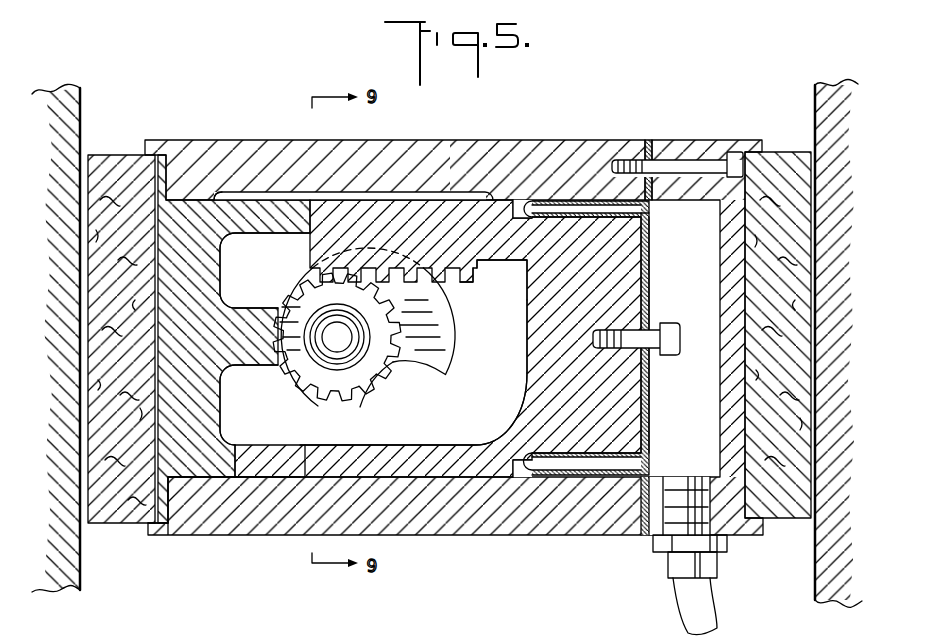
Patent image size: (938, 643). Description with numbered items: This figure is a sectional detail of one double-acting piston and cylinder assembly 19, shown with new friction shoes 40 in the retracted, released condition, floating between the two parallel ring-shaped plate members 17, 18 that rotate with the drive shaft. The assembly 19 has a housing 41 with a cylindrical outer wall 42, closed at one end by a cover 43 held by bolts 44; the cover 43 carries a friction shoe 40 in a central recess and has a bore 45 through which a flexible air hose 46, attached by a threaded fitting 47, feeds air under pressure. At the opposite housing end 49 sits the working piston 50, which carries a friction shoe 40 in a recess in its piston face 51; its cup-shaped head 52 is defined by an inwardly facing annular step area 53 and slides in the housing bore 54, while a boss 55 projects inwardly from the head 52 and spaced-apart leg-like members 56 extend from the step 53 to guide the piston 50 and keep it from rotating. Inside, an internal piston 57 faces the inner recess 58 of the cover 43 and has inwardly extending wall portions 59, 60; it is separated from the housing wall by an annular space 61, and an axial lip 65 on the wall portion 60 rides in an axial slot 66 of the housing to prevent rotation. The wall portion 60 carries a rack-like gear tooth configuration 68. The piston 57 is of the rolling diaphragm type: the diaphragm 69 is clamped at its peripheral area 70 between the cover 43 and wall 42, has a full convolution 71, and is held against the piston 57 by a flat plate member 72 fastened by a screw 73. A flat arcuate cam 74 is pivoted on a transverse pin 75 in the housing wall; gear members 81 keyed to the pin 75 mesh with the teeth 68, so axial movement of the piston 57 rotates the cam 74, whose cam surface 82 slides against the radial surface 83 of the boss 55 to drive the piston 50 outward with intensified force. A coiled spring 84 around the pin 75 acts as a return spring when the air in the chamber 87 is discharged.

The plate member 17 is at (20, 316).
The plate member 18 is at (860, 206).
The piston and cylinder assembly 19 is at (214, 90).
The friction shoe 40 is at (118, 163).
The housing 41 is at (436, 527).
The cylindrical outer wall 42 is at (566, 200).
The cover 43 is at (686, 140).
The bolt 44 is at (703, 160).
The bore 45 is at (713, 510).
The flexible air hose 46 is at (682, 607).
The threaded fitting 47 is at (660, 550).
The housing end 49 is at (152, 560).
The working piston 50 is at (163, 538).
The piston face 51 is at (176, 152).
The piston head 52 is at (208, 417).
The annular step area 53 is at (172, 517).
The bore 54 is at (245, 480).
The boss 55 is at (250, 306).
The spaced-apart members 56 is at (275, 208).
The internal piston 57 is at (537, 340).
The inner recess 58 is at (724, 290).
The wall portion 59 is at (456, 458).
The wall portion 60 is at (512, 259).
The annular space 61 is at (522, 202).
The axial lip 65 is at (392, 197).
The axial slot 66 is at (250, 196).
The gear tooth configuration 68 is at (474, 278).
The diaphragm 69 is at (650, 242).
The peripheral area 70 is at (648, 142).
The convolution 71 is at (525, 458).
The flat plate member 72 is at (651, 277).
The screw 73 is at (667, 350).
The cam 74 is at (443, 358).
The pin 75 is at (328, 348).
The gear member 81 is at (328, 370).
The cam surface 82 is at (458, 315).
The radial surface 83 is at (282, 356).
The coiled spring 84 is at (368, 400).
The chamber 87 is at (700, 413).